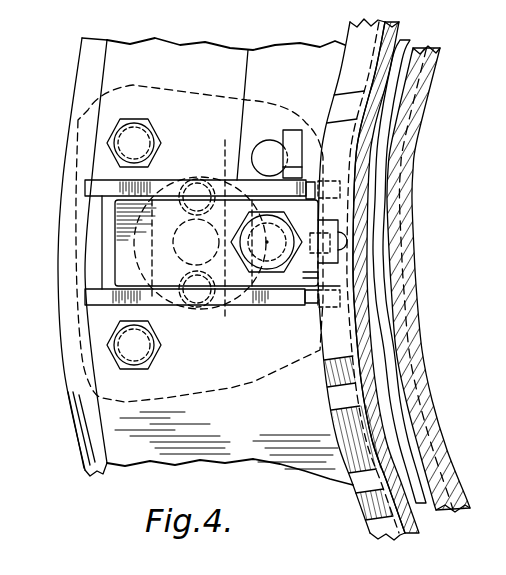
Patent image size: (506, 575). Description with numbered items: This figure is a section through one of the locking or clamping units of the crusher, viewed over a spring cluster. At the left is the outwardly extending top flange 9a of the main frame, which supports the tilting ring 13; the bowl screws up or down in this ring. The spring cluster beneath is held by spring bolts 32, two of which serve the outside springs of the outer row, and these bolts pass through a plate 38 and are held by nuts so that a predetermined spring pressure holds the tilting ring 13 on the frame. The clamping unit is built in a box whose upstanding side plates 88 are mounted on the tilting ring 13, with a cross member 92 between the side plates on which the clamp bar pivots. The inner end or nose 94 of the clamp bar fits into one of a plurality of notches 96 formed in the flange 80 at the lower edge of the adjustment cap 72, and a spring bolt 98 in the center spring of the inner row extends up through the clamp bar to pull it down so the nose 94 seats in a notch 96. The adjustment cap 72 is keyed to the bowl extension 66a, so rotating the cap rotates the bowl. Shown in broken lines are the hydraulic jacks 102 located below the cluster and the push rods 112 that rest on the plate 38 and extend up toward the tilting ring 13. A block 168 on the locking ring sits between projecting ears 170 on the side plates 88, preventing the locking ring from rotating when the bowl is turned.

The top flange 9a is at (85, 441).
The tilting ring 13 is at (137, 468).
The spring bolt 32 is at (136, 141).
The plate 38 is at (78, 125).
The bowl extension 66a is at (440, 72).
The adjustment cap 72 is at (383, 33).
The flange 80 is at (358, 36).
The side plates 88 is at (100, 186).
The cross member 92 is at (102, 250).
The nose 94 is at (330, 233).
The notches 96 is at (342, 242).
The spring bolt 98 is at (263, 247).
The hydraulic jacks 102 is at (226, 141).
The push rods 112 is at (213, 153).
The block 168 is at (340, 280).
The projecting ears 170 is at (340, 190).